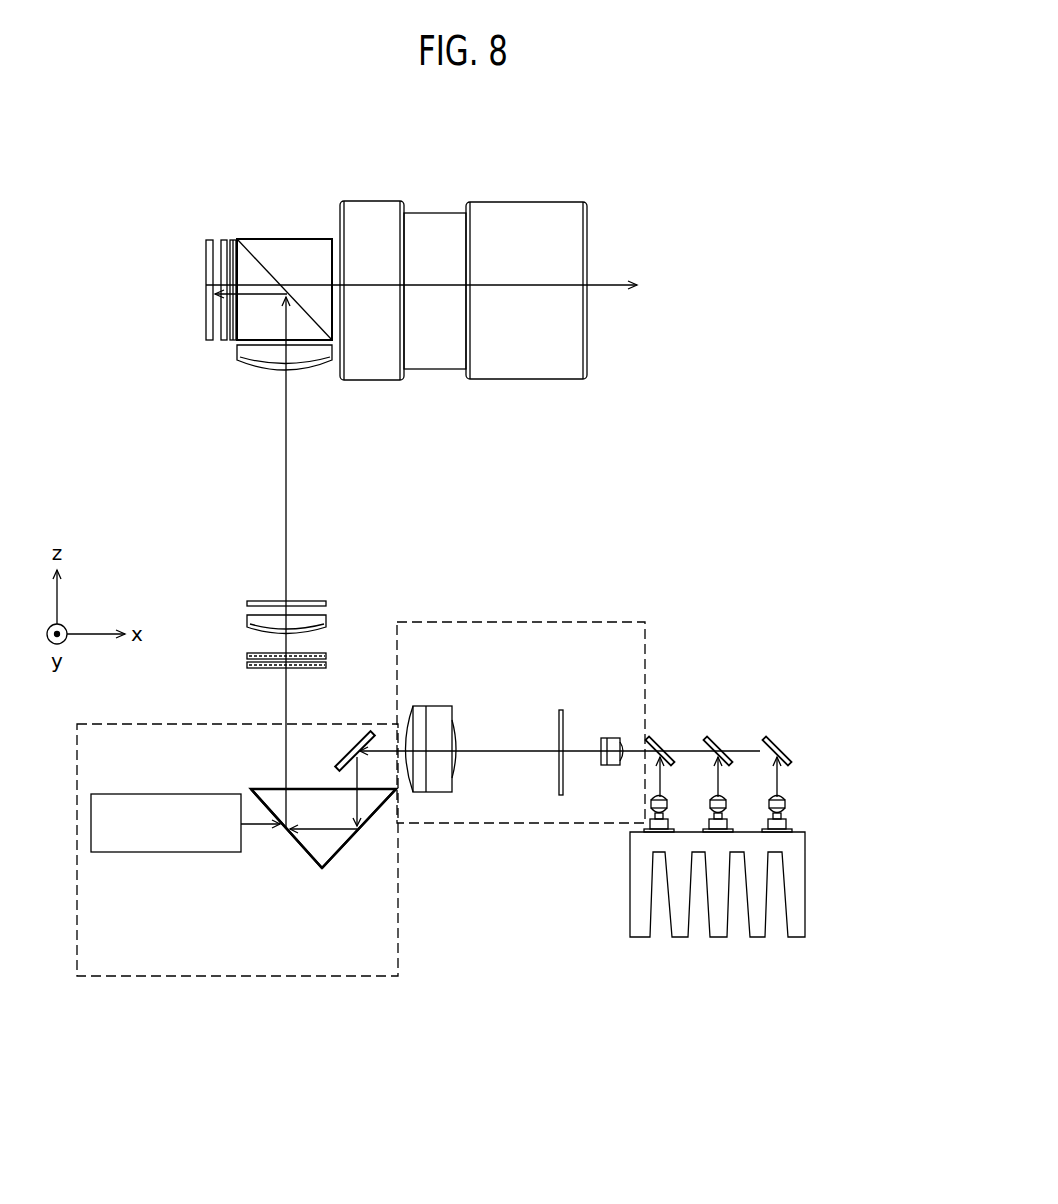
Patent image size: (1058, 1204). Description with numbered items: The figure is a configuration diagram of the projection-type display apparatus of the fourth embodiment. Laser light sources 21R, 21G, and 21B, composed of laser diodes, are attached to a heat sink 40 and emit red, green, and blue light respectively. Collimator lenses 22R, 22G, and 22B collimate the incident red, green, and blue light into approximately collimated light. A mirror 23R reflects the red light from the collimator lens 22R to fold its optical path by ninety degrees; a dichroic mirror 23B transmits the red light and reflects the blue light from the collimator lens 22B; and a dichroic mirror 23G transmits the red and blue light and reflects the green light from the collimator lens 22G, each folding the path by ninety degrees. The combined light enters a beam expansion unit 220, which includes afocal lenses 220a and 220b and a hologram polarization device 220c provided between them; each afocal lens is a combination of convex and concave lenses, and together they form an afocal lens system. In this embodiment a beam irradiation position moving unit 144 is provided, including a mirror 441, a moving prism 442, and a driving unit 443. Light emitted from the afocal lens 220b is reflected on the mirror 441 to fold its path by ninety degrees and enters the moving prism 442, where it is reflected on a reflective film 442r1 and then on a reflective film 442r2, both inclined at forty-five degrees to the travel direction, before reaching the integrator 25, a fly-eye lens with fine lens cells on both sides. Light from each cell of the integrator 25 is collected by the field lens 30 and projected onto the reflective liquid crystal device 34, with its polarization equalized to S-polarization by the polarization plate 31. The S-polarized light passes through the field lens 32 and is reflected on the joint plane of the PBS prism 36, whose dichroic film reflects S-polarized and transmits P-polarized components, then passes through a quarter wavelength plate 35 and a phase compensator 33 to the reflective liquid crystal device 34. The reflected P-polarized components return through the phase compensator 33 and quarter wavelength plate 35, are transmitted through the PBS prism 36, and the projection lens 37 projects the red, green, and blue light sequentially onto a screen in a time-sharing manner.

The laser light source 21G is at (645, 830).
The laser light source 21B is at (703, 820).
The laser light source 21R is at (783, 826).
The collimator lens 22G is at (650, 803).
The collimator lens 22B is at (735, 800).
The collimator lens 22R is at (787, 806).
The dichroic mirror 23G is at (660, 740).
The dichroic mirror 23B is at (722, 745).
The mirror 23R is at (783, 748).
The integrator 25 is at (247, 664).
The field lens 30 is at (247, 618).
The polarization plate 31 is at (250, 600).
The field lens 32 is at (258, 373).
The phase compensator 33 is at (222, 240).
The reflective liquid crystal device 34 is at (206, 266).
The quarter wavelength plate 35 is at (233, 238).
The PBS prism 36 is at (323, 312).
The projection lens 37 is at (433, 222).
The heat sink 40 is at (720, 925).
The beam irradiation position moving unit 144 is at (267, 976).
The beam expansion unit 220 is at (556, 620).
The afocal lens 220a is at (606, 738).
The afocal lens 220b is at (442, 792).
The hologram polarization device 220c is at (562, 708).
The mirror 441 is at (363, 728).
The moving prism 442 is at (367, 810).
The reflective film 442r1 is at (347, 847).
The reflective film 442r2 is at (300, 843).
The driving unit 443 is at (165, 852).